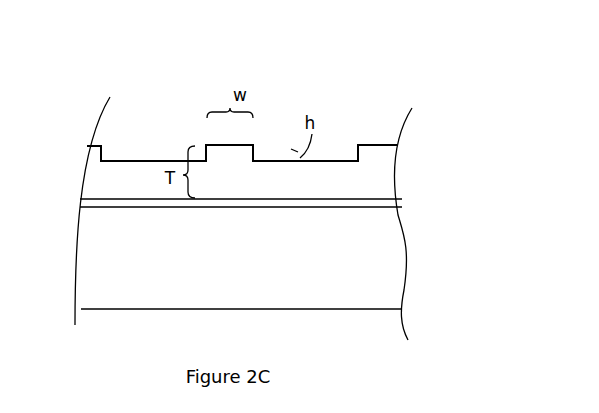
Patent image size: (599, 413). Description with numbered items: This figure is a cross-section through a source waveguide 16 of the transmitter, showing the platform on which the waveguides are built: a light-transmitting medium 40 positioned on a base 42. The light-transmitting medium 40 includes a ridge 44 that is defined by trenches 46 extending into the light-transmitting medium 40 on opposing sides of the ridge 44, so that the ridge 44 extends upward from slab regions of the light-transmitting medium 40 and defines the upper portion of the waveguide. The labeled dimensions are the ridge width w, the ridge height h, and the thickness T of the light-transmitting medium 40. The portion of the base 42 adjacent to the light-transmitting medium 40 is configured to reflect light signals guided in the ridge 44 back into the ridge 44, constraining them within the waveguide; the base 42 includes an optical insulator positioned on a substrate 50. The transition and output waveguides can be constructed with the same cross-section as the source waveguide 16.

The source waveguide 16 is at (194, 130).
The light-transmitting medium 40 is at (102, 180).
The base 42 is at (55, 200).
The ridge 44 is at (236, 144).
The trenches 46 is at (127, 159).
The substrate 50 is at (135, 298).